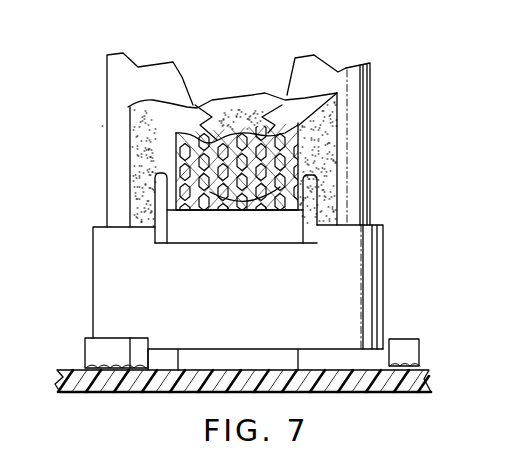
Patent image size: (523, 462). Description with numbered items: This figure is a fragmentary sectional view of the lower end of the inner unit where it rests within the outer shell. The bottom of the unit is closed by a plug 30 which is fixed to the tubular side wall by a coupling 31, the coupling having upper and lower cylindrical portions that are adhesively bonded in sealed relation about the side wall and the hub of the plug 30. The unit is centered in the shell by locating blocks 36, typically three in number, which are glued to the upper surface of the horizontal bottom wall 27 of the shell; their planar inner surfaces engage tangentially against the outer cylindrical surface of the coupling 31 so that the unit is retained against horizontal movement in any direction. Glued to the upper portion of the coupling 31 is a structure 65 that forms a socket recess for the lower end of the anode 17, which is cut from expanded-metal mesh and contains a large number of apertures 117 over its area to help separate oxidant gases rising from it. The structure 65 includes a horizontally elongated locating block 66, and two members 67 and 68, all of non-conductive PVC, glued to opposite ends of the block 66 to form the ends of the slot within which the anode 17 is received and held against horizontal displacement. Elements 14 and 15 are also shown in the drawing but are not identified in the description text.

The cover layer 14 is at (236, 76).
The side panel 15 is at (304, 100).
The anode 17 is at (299, 135).
The apertures 117 is at (210, 143).
The member 68 is at (160, 192).
The member 67 is at (311, 195).
The locating block 66 is at (203, 228).
The structure 65 is at (136, 233).
The coupling 31 is at (361, 256).
The locating blocks 36 is at (107, 338).
The plug 30 is at (213, 363).
The bottom wall 27 is at (349, 383).